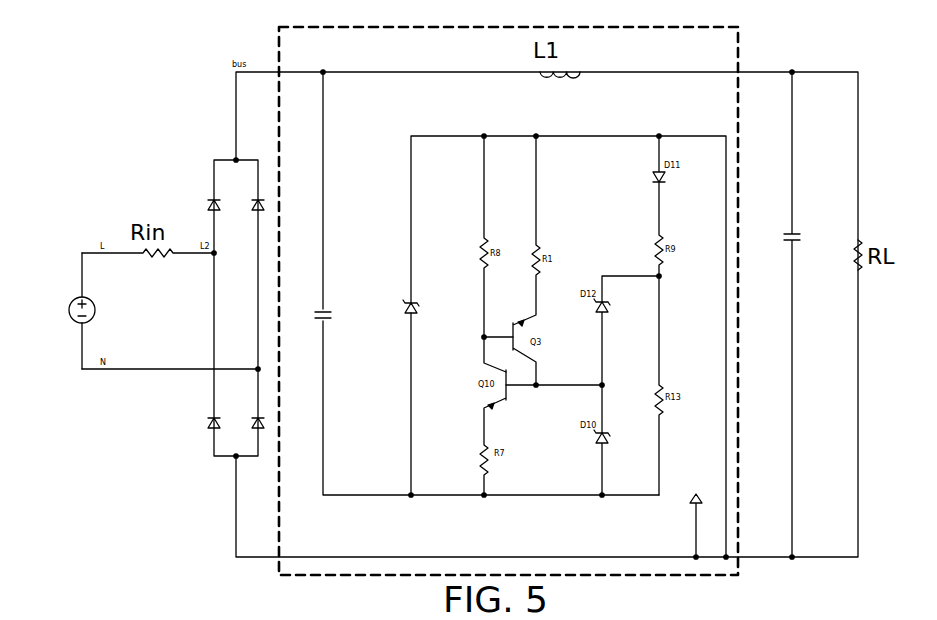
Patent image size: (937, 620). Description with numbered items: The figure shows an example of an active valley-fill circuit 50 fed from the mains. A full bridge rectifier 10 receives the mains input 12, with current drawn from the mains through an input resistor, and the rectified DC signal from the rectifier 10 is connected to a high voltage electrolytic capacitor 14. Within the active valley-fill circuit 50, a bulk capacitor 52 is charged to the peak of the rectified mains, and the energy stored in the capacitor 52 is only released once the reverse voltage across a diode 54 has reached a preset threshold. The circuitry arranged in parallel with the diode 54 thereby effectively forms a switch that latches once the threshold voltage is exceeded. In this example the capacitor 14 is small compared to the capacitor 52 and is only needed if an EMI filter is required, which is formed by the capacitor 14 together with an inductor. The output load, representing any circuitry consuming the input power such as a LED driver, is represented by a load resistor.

The full bridge rectifier 10 is at (186, 450).
The mains input 12 is at (67, 298).
The high voltage electrolytic capacitor 14 is at (792, 240).
The active valley-fill circuit 50 is at (738, 52).
The bulk capacitor 52 is at (328, 320).
The diode 54 is at (413, 313).